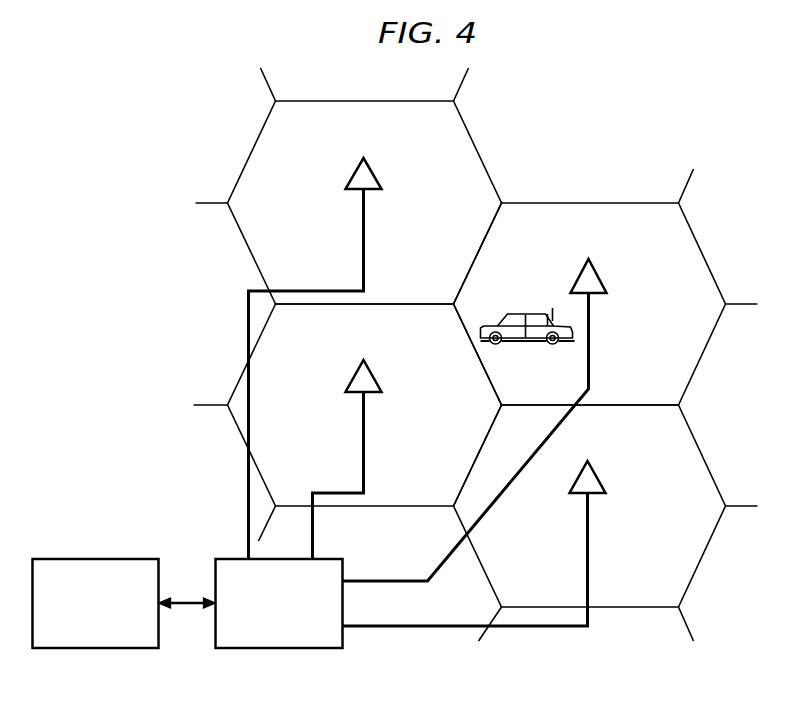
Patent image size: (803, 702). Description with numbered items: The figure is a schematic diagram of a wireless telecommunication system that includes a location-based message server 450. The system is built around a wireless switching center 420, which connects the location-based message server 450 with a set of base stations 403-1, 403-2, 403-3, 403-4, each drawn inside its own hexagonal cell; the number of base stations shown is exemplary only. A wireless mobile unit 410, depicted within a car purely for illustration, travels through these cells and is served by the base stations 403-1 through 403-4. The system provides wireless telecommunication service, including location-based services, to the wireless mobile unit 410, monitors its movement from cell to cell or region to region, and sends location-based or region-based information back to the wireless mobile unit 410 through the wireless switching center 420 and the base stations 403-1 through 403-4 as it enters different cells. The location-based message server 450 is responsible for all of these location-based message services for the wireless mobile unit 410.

The base station 403-1 is at (366, 231).
The base station 403-2 is at (366, 432).
The base station 403-3 is at (591, 332).
The base station 403-4 is at (589, 534).
The wireless mobile unit 410 is at (534, 341).
The wireless switching center 420 is at (281, 650).
The location-based message server 450 is at (97, 650).